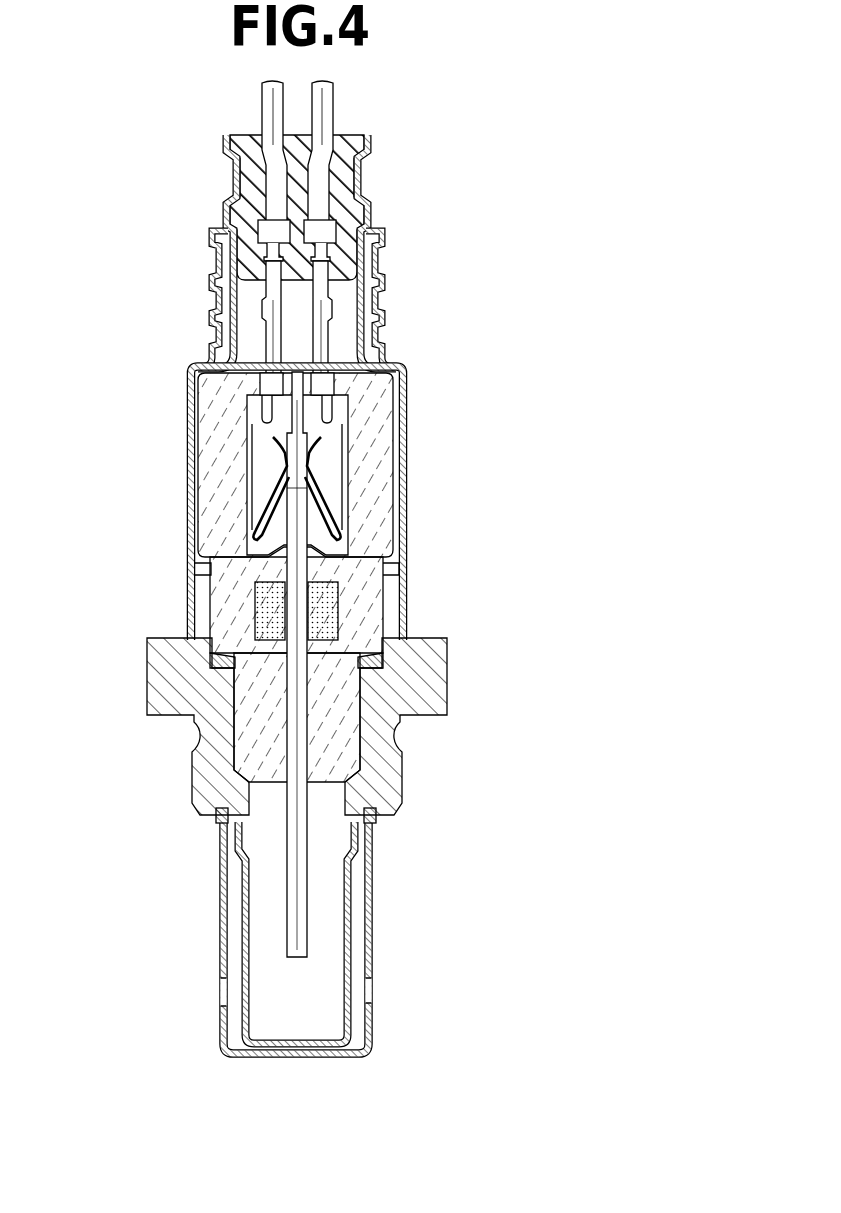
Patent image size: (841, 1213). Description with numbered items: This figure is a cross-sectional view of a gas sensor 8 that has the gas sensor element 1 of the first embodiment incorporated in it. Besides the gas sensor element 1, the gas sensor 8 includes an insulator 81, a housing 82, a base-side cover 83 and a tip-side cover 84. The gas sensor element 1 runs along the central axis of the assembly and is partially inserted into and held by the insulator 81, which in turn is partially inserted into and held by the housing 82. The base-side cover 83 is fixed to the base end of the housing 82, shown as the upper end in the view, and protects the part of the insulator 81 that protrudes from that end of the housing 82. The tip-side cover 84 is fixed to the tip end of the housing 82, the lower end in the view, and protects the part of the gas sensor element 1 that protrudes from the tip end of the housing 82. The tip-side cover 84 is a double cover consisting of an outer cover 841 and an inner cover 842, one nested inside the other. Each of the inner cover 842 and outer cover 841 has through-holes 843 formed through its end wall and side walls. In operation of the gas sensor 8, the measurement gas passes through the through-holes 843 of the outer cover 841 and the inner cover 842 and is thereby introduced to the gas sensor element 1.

The gas sensor 8 is at (413, 183).
The base-side cover 83 is at (190, 468).
The insulator 81 is at (253, 692).
The housing 82 is at (420, 680).
The gas sensor element 1 is at (297, 921).
The tip-side cover 84 is at (222, 888).
The outer cover 841 is at (318, 1057).
The inner cover 842 is at (345, 1020).
The through-holes 843 is at (222, 993).